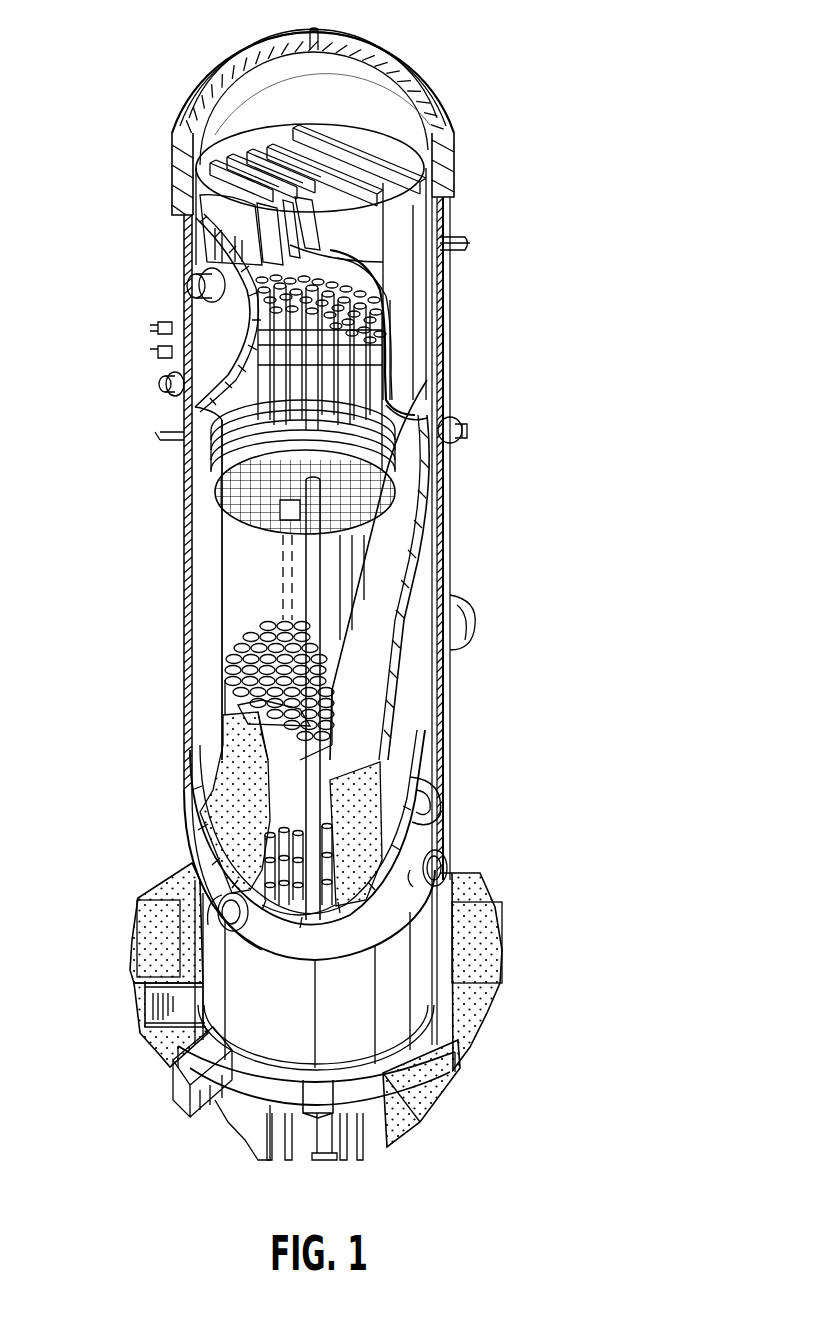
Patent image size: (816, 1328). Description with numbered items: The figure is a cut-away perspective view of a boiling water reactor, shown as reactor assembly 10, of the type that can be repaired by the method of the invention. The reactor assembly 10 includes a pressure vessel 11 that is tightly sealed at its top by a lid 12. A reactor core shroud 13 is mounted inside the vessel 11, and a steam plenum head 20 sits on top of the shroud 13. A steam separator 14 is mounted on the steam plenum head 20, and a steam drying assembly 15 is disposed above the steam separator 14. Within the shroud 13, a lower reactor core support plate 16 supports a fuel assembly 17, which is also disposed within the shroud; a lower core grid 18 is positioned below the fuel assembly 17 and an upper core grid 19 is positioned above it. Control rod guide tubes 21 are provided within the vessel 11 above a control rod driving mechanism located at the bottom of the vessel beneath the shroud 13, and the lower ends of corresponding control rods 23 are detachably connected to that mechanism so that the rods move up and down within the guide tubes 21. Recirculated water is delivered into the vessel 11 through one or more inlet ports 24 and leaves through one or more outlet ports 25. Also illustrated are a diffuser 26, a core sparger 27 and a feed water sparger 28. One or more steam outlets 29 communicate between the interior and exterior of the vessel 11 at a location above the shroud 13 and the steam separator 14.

The reactor assembly 10 is at (548, 112).
The pressure vessel 11 is at (437, 568).
The lid 12 is at (390, 62).
The reactor core shroud 13 is at (232, 628).
The steam separator 14 is at (395, 352).
The steam drying assembly 15 is at (230, 218).
The lower reactor core support plate 16 is at (332, 692).
The fuel assembly 17 is at (370, 546).
The lower core grid 18 is at (262, 713).
The upper core grid 19 is at (232, 494).
The steam plenum head 20 is at (412, 396).
The control rod guide tubes 21 is at (290, 797).
The control rods 23 is at (300, 550).
The inlet ports 24 is at (228, 913).
The outlet ports 25 is at (412, 808).
The diffuser 26 is at (222, 822).
The core sparger 27 is at (215, 470).
The feed water sparger 28 is at (185, 402).
The steam outlets 29 is at (190, 290).